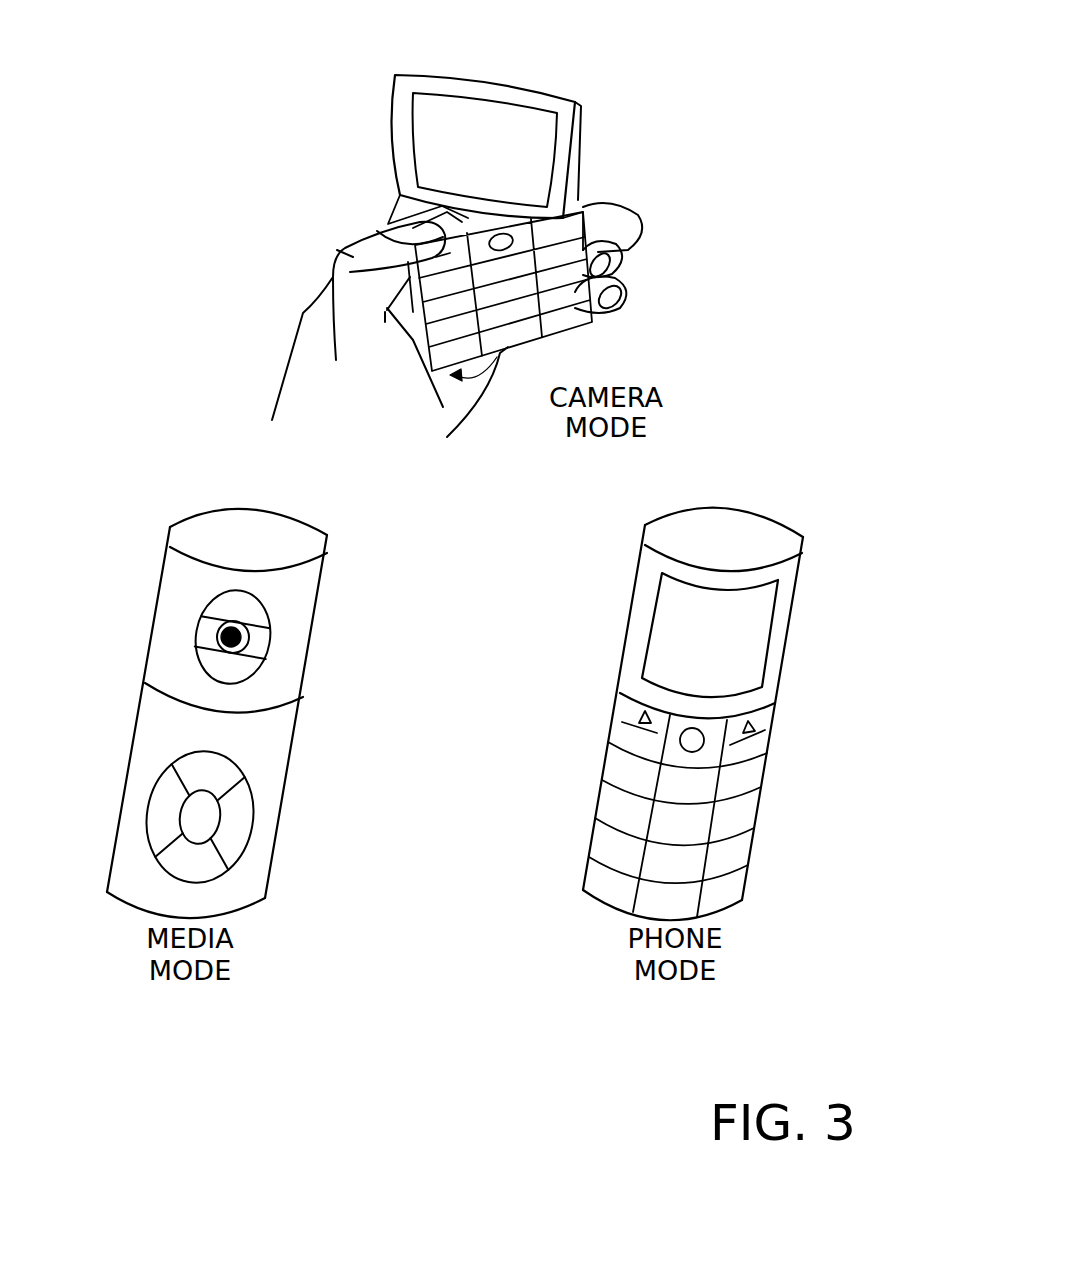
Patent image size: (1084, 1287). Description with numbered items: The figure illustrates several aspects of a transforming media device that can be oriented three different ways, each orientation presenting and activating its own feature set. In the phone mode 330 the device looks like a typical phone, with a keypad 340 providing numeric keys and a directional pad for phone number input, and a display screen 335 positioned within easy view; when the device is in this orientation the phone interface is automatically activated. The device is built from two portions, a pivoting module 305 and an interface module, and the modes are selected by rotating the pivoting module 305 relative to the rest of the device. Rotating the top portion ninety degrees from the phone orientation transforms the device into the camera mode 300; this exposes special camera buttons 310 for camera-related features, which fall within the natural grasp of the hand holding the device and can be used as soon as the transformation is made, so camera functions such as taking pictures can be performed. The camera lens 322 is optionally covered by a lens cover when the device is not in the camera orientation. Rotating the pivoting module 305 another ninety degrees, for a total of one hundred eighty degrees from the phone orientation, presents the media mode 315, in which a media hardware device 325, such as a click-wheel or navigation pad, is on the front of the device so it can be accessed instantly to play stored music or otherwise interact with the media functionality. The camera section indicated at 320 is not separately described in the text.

The camera mode 300 is at (322, 103).
The pivoting module 305 is at (606, 139).
The camera buttons 310 is at (370, 199).
The media mode 315 is at (145, 512).
The camera section 320 is at (338, 625).
The camera lens 322 is at (272, 667).
The media hardware device 325 is at (300, 803).
The phone mode 330 is at (826, 482).
The display screen 335 is at (812, 610).
The keypad 340 is at (808, 766).